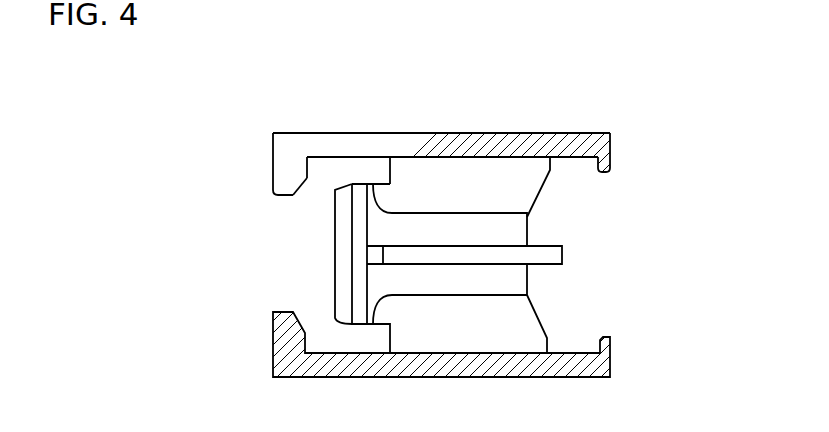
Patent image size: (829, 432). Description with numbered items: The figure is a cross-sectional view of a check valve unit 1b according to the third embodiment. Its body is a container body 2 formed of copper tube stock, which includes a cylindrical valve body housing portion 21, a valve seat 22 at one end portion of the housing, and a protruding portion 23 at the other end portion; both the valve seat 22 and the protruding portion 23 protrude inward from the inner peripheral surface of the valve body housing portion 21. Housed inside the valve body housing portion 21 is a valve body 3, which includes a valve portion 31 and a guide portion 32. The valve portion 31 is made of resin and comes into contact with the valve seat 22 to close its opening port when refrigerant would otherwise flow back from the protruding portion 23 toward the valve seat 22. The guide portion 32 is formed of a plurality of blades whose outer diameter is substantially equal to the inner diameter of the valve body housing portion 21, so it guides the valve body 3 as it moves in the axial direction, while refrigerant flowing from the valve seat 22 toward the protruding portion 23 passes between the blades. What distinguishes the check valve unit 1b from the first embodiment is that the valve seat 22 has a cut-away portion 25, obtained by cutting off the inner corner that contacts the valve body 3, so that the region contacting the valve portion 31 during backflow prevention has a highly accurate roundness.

The check valve unit 1b is at (652, 167).
The container body 2 is at (505, 140).
The valve body housing portion 21 is at (453, 140).
The valve seat 22 is at (273, 185).
The protruding portion 23 is at (612, 162).
The cut-away portion 25 is at (300, 188).
The valve body 3 is at (457, 277).
The valve portion 31 is at (340, 272).
The guide portion 32 is at (495, 343).